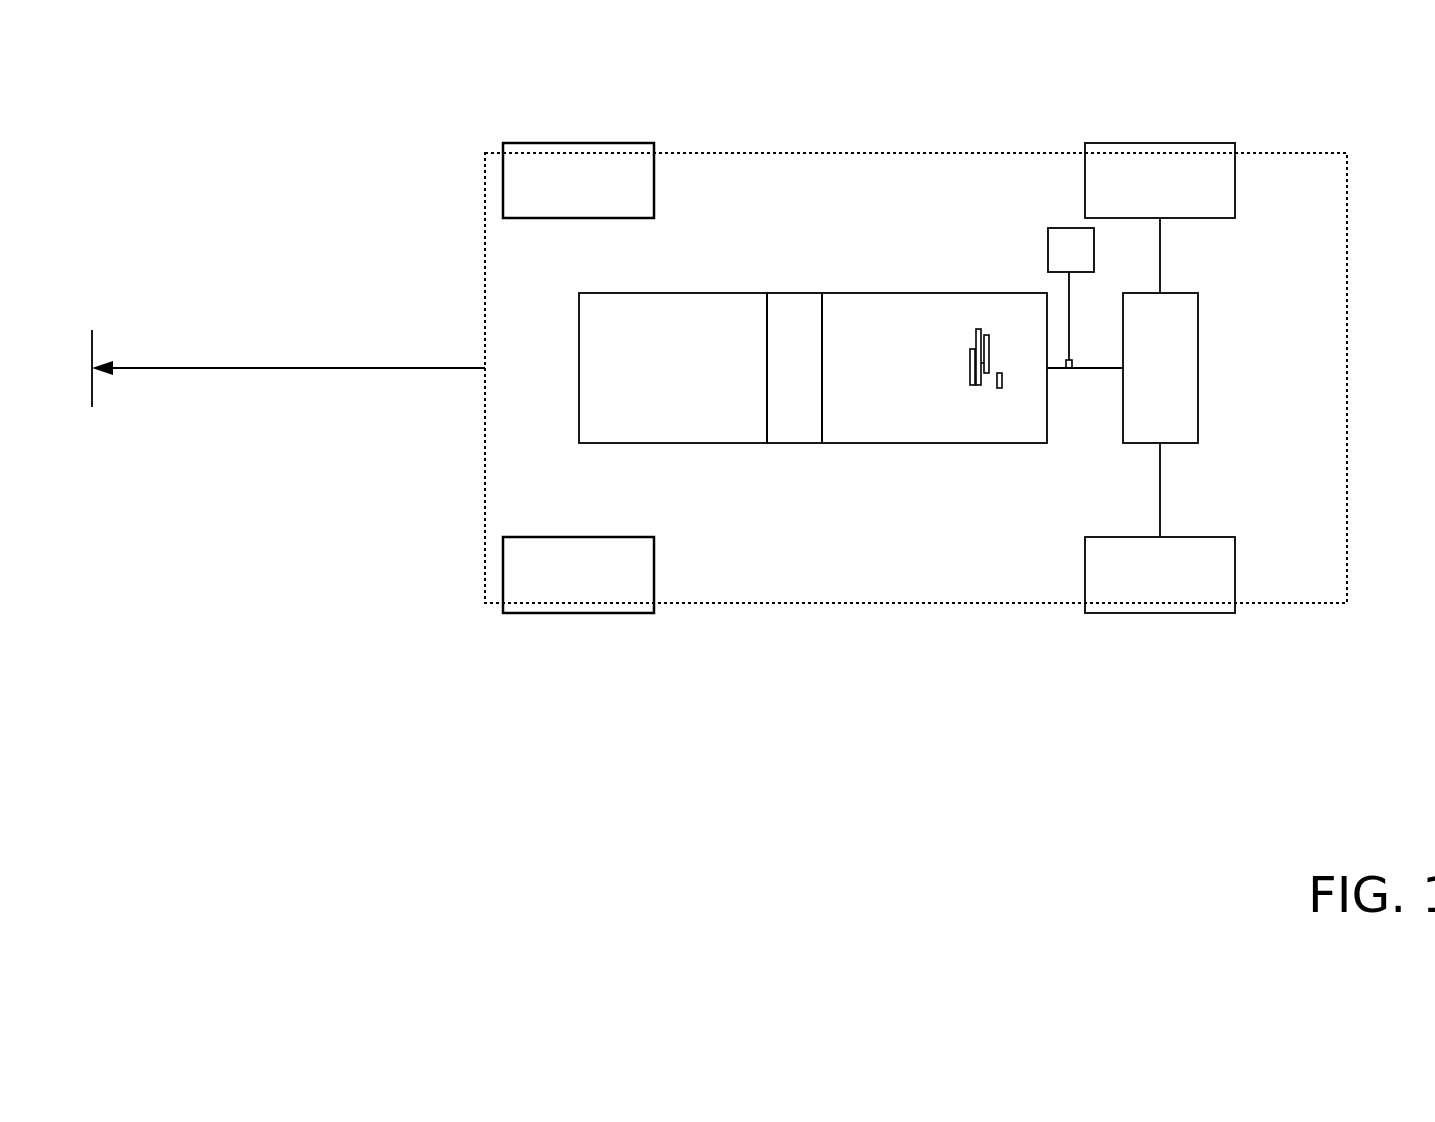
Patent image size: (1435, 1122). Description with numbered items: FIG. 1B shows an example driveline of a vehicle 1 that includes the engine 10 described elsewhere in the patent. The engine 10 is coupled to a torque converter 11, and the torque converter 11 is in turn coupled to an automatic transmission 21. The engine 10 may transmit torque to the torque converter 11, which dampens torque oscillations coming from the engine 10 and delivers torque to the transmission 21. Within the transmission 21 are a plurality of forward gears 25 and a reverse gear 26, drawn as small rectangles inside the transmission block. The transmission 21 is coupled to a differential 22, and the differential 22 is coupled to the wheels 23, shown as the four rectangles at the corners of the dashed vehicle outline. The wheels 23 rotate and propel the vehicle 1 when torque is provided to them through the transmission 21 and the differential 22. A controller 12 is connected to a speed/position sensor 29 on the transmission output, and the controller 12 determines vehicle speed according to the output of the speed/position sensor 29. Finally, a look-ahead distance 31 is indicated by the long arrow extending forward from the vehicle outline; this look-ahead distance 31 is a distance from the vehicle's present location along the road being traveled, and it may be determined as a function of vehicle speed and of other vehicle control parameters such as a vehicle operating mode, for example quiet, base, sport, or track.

The vehicle 1 is at (1034, 75).
The engine 10 is at (659, 381).
The torque converter 11 is at (781, 381).
The controller 12 is at (1057, 263).
The automatic transmission 21 is at (919, 381).
The differential 22 is at (1160, 368).
The wheels 23 is at (1160, 378).
The forward gears 25 is at (997, 327).
The reverse gear 26 is at (1013, 394).
The speed/position sensor 29 is at (1073, 363).
The look-ahead distance 31 is at (298, 368).